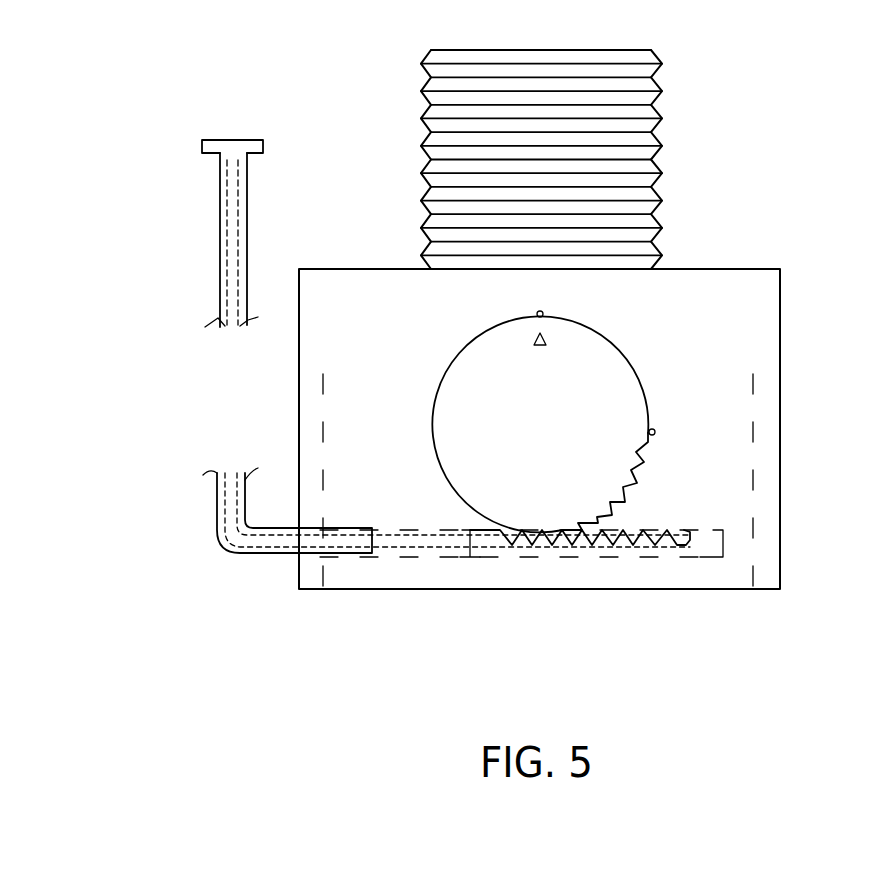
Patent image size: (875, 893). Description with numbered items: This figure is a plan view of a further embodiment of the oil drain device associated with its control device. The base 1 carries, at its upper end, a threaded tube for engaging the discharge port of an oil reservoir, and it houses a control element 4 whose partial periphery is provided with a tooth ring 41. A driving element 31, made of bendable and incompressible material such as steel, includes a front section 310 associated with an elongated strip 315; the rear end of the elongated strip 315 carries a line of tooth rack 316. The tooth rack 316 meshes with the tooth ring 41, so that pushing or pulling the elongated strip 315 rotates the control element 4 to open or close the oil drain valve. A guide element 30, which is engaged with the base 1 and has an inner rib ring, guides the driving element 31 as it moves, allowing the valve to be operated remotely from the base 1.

The base 1 is at (397, 252).
The control element 4 is at (620, 370).
The tooth ring 41 is at (633, 483).
The guide element 30 is at (217, 506).
The driving element 31 is at (233, 252).
The front section 310 is at (208, 147).
The elongated strip 315 is at (395, 540).
The tooth rack 316 is at (510, 546).